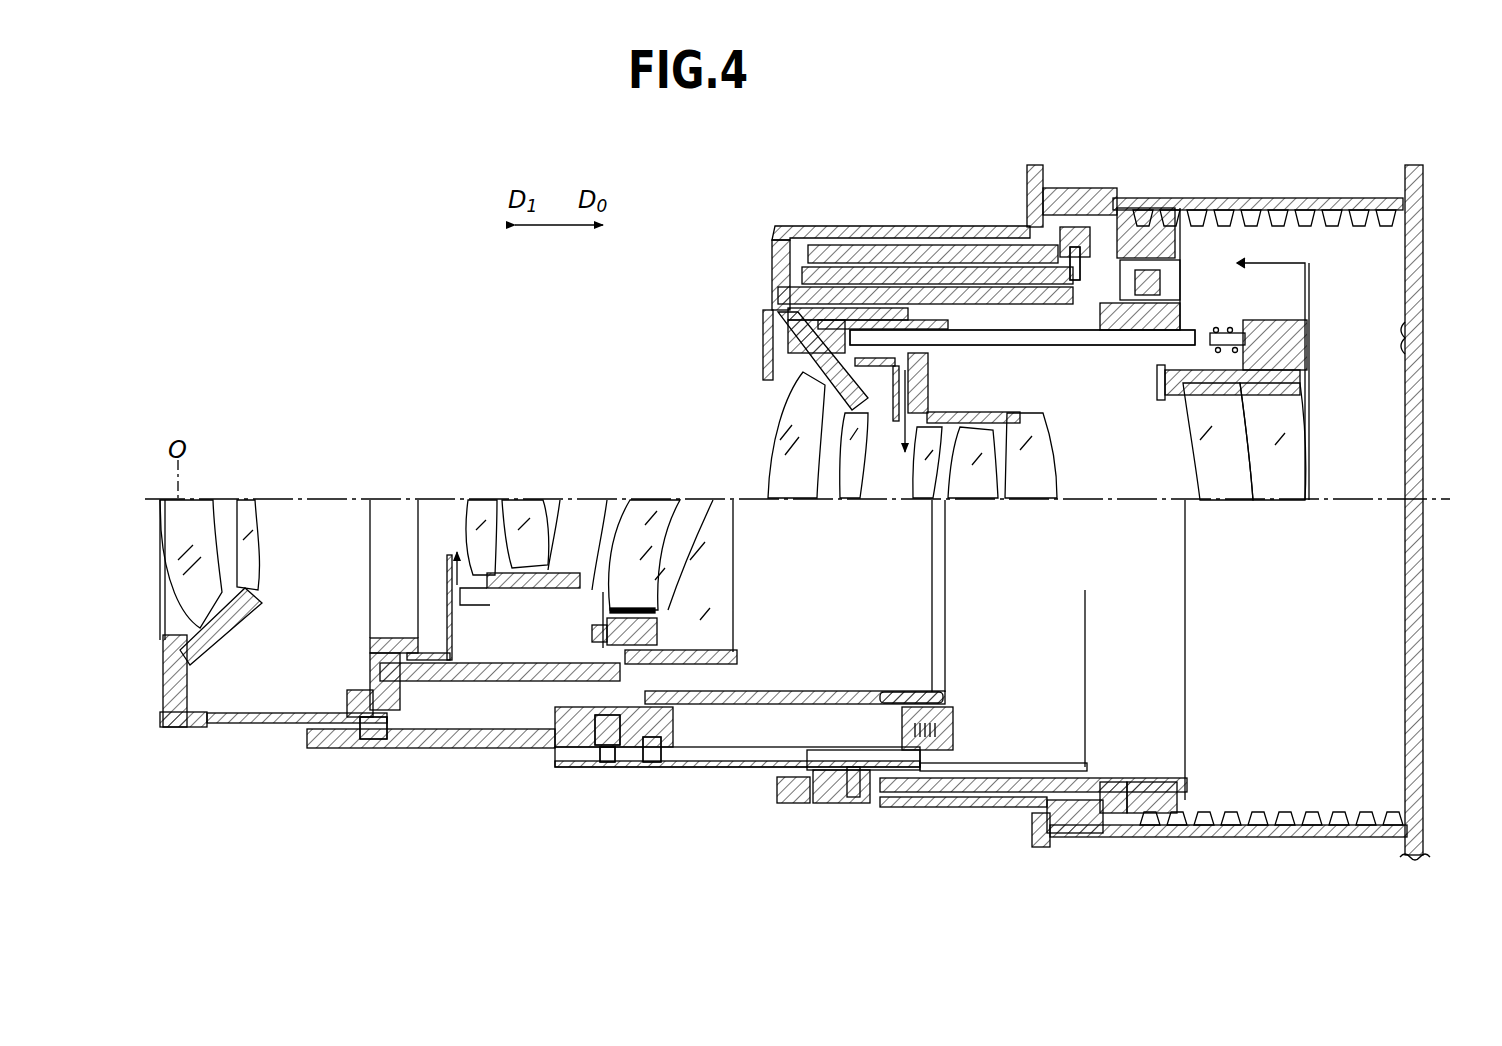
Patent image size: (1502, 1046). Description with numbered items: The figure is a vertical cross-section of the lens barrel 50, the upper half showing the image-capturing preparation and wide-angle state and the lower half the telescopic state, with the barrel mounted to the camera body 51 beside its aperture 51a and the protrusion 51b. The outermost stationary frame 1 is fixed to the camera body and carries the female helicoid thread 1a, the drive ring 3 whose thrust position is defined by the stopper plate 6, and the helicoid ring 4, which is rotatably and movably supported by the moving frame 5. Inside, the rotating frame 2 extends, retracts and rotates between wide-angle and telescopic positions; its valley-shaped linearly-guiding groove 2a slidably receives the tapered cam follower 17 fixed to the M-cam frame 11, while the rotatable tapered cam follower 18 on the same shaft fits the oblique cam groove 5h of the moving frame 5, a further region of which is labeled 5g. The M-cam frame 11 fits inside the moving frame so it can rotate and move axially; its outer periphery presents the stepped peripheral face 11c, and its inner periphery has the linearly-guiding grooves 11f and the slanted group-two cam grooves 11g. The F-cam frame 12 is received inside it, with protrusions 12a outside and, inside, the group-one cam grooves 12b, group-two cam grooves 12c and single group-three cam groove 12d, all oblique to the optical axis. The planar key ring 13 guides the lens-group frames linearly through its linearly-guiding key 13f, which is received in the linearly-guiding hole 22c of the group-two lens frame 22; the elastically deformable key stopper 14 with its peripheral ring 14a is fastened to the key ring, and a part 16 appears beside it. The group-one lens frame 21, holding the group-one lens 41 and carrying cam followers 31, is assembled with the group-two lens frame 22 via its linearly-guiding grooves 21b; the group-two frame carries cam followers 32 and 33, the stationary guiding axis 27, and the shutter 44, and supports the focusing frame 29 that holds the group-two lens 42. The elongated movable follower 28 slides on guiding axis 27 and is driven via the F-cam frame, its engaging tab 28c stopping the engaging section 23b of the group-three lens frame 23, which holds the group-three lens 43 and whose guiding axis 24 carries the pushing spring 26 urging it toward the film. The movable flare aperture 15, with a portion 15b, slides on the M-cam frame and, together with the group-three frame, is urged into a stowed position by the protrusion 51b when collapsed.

The stationary frame 1 is at (1370, 198).
The female helicoid thread 1a is at (1270, 218).
The rotating frame 2 is at (875, 228).
The linearly-guiding groove 2a is at (843, 240).
The drive ring 3 is at (1085, 190).
The helicoid ring 4 is at (1152, 216).
The moving frame 5 is at (810, 245).
The guide portion 5g is at (1152, 783).
The cam groove 5h is at (1075, 263).
The stopper plate 6 is at (1036, 170).
The M-cam frame 11 is at (805, 268).
The stepped peripheral face 11c is at (980, 772).
The linearly-guiding groove 11f is at (607, 754).
The group-2 cam groove 11g is at (652, 749).
The F-cam frame 12 is at (780, 294).
The protrusion 12a is at (615, 765).
The group-1 cam groove 12b is at (1020, 335).
The group-2 cam groove 12c is at (1050, 345).
The group-3 cam groove 12d is at (1022, 337).
The key ring 13 is at (1180, 302).
The linearly-guiding key 13f is at (830, 688).
The key stopper 14 is at (900, 715).
The ring 14a is at (910, 793).
The movable flare aperture 15 is at (1312, 304).
The guide projection 15b is at (1245, 268).
The spring 16 is at (947, 732).
The cam follower 17 is at (1060, 240).
The cam follower 18 is at (1025, 248).
The group-1 lens frame 21 is at (760, 315).
The linearly-guiding groove 21b is at (267, 725).
The group-2 lens frame 22 is at (775, 365).
The linearly-guiding hole 22c is at (660, 687).
The group-3 lens frame 23 is at (1300, 360).
The engaging section 23b is at (1160, 395).
The guiding axis 24 is at (1267, 330).
The pushing spring 26 is at (1218, 331).
The guiding axis 27 is at (1120, 335).
The movable follower 28 is at (910, 320).
The engaging tab 28c is at (1175, 405).
The focusing frame 29 is at (988, 417).
The cam follower 31 is at (373, 728).
The cam follower 32 is at (1130, 260).
The cam follower 33 is at (607, 730).
The group-1 lens 41 is at (797, 500).
The group-2 lens 42 is at (1022, 500).
The group-3 lens 43 is at (1243, 480).
The shutter 44 is at (910, 427).
The lens barrel 50 is at (1322, 122).
The camera body 51 is at (1422, 188).
The aperture 51a is at (1412, 460).
The protrusion 51b is at (1407, 325).